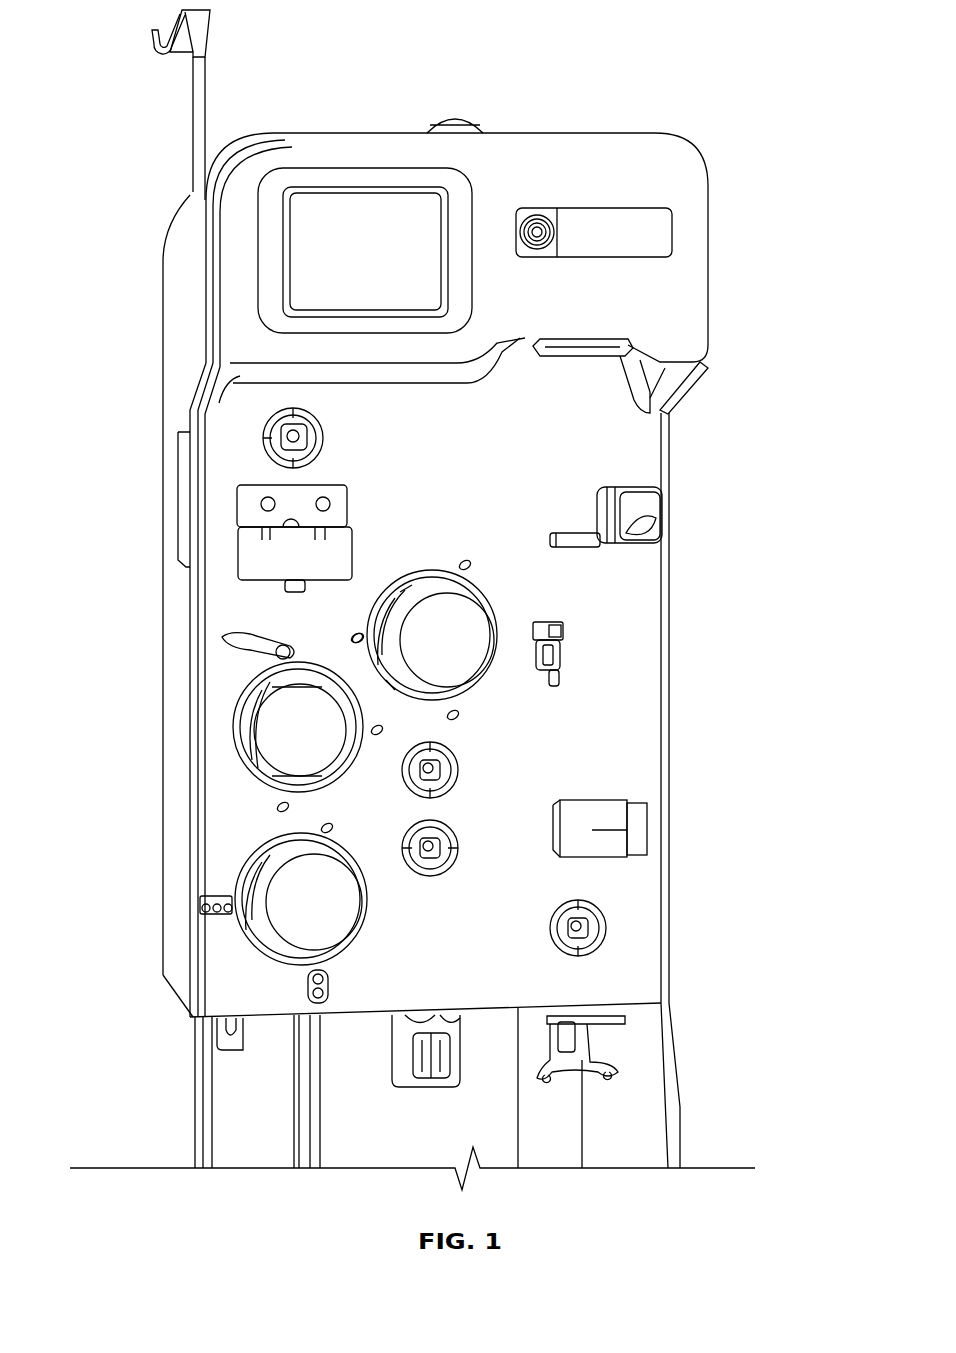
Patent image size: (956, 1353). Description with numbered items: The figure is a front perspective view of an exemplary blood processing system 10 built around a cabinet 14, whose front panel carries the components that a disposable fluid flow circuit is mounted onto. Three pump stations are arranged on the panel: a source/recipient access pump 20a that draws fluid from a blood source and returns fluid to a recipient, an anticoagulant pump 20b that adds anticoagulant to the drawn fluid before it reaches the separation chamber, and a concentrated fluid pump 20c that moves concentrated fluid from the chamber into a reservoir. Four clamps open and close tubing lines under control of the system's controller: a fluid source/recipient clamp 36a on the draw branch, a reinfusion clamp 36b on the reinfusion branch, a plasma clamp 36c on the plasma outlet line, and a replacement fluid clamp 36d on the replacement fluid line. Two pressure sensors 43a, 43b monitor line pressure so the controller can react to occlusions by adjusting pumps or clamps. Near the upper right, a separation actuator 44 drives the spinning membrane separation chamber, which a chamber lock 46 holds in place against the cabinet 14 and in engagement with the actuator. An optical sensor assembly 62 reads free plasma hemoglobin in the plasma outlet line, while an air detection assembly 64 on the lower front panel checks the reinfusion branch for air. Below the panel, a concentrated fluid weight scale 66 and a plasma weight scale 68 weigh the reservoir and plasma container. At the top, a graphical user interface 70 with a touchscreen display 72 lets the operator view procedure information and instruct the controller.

The blood processing system 10 is at (176, 536).
The cabinet 14 is at (700, 280).
The source/recipient access pump 20a is at (288, 902).
The anticoagulant pump 20b is at (265, 742).
The concentrated fluid pump 20c is at (468, 625).
The fluid source/recipient clamp 36a is at (460, 765).
The reinfusion clamp 36b is at (460, 838).
The plasma clamp 36c is at (606, 929).
The replacement fluid clamp 36d is at (276, 438).
The pressure sensor 43a is at (256, 503).
The pressure sensor 43b is at (318, 492).
The separation actuator 44 is at (628, 350).
The chamber lock 46 is at (650, 507).
The optical sensor assembly 62 is at (592, 830).
The air detection assembly 64 is at (393, 1043).
The concentrated fluid weight scale 66 is at (563, 665).
The plasma weight scale 68 is at (578, 1040).
The graphical user interface 70 is at (478, 198).
The display 72 is at (381, 263).